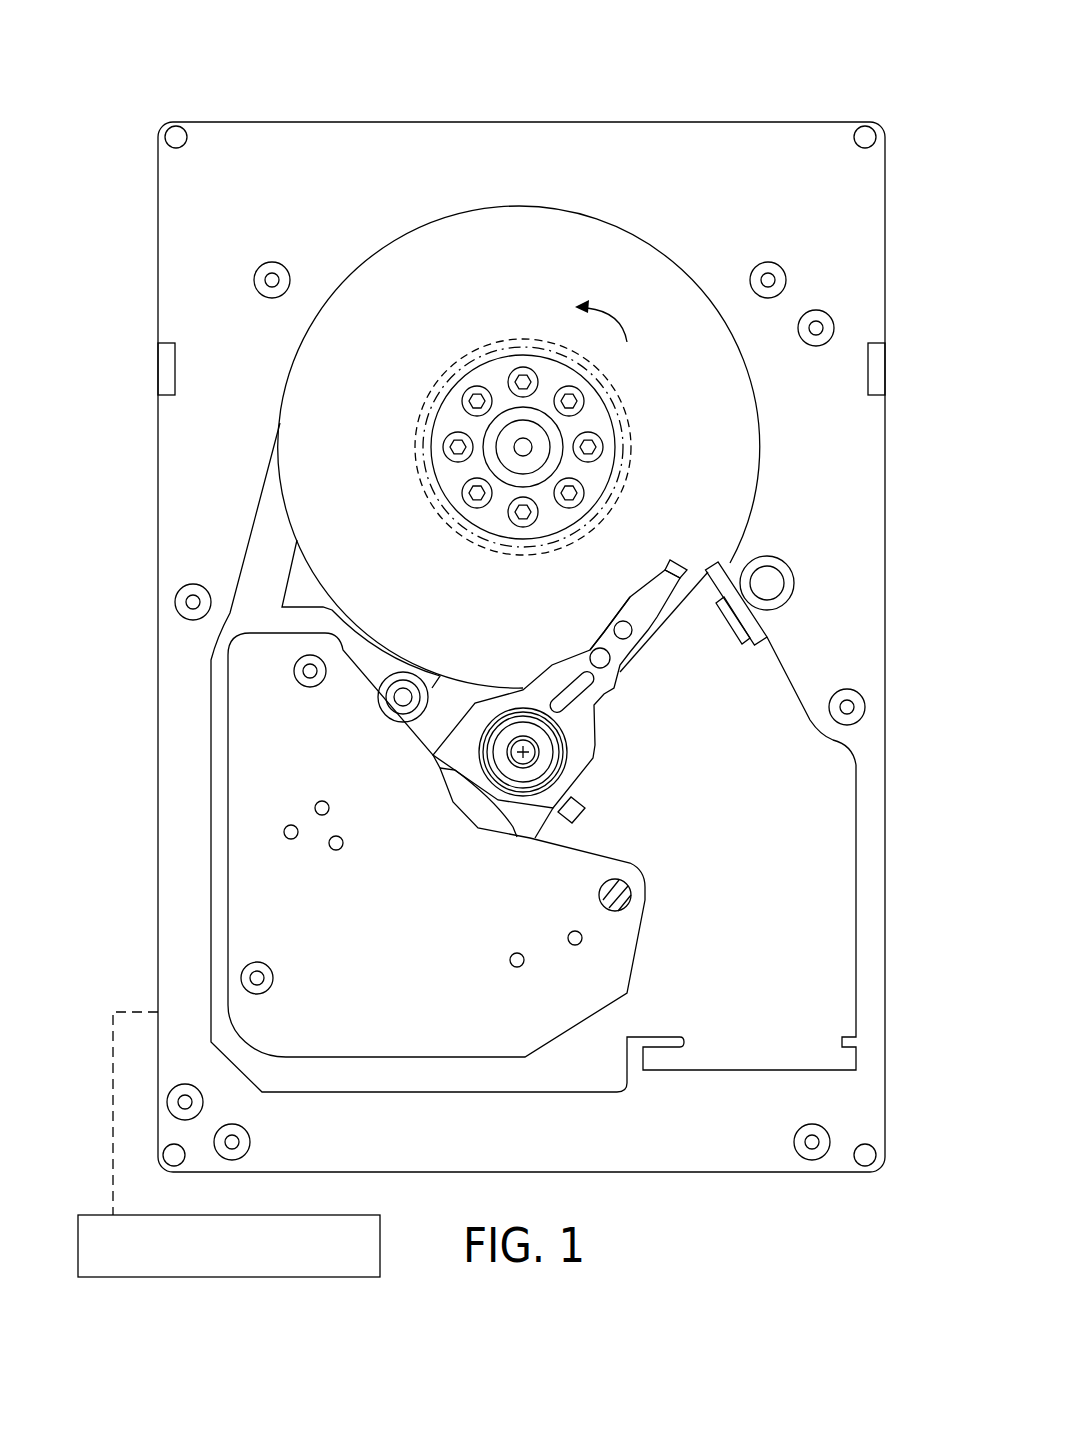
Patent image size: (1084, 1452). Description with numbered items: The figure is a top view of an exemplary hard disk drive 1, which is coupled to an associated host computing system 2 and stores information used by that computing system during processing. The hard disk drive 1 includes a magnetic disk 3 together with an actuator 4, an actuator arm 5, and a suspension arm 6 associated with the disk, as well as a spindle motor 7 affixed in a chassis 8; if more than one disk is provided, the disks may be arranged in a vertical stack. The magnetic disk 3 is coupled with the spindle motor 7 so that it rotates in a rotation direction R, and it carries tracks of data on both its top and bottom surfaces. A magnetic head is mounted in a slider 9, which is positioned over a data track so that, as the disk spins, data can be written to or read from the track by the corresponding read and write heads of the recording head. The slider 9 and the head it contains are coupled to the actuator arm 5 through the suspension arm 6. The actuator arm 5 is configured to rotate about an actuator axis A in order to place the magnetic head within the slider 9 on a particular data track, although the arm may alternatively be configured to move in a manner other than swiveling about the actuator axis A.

The hard disk drive 1 is at (428, 38).
The host computing system 2 is at (229, 1144).
The magnetic disk 3 is at (557, 255).
The actuator 4 is at (618, 950).
The actuator arm 5 is at (608, 640).
The suspension arm 6 is at (643, 607).
The spindle motor 7 is at (538, 448).
The chassis 8 is at (555, 122).
The slider 9 is at (668, 562).
The actuator axis A is at (535, 743).
The rotation direction R is at (603, 311).